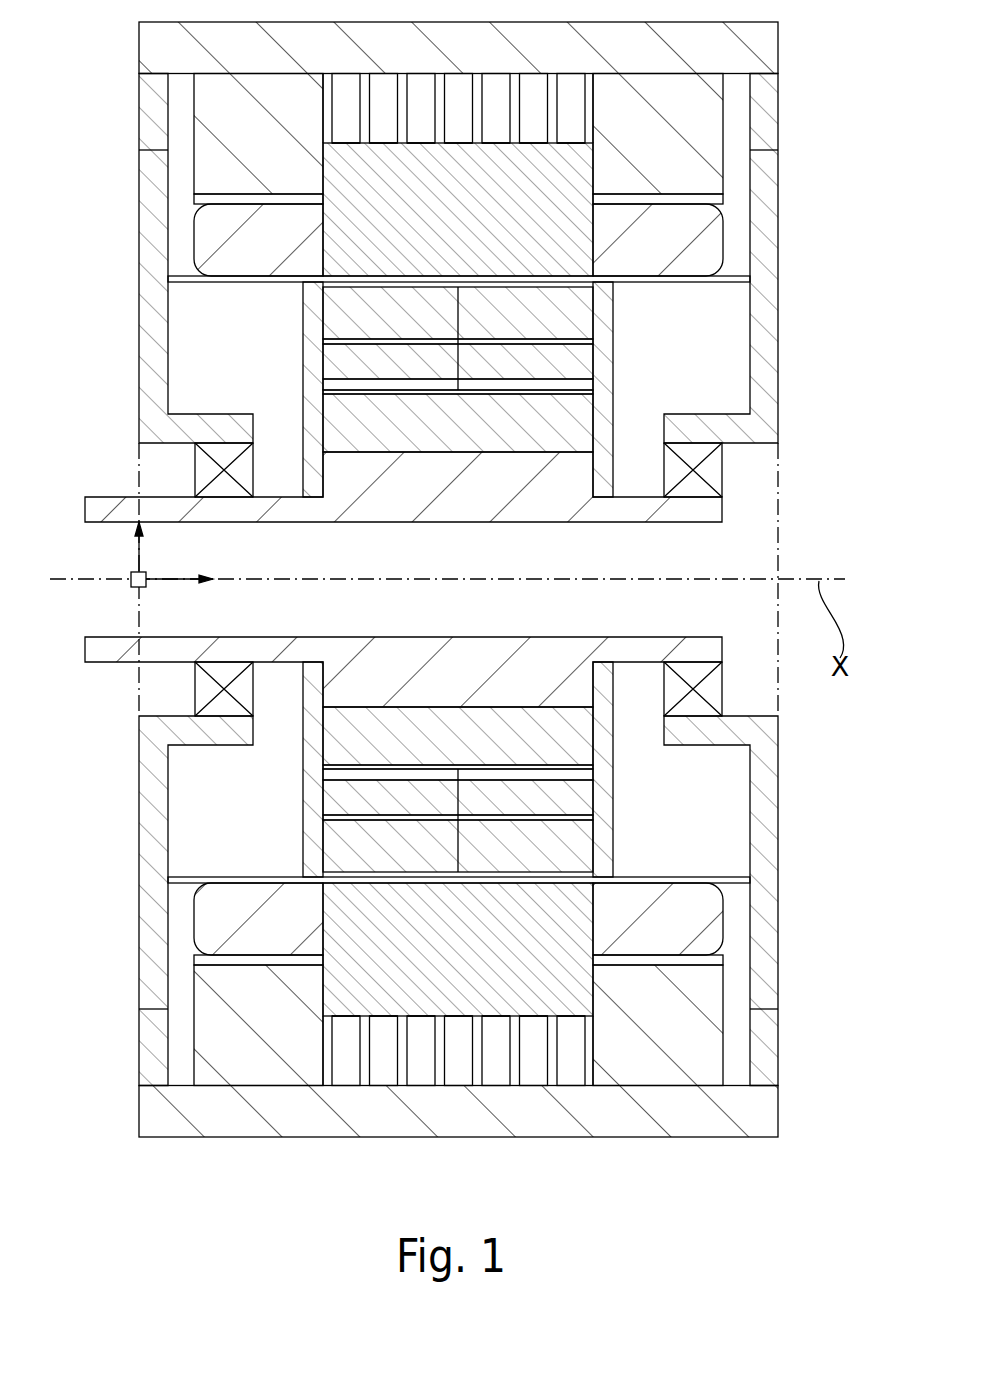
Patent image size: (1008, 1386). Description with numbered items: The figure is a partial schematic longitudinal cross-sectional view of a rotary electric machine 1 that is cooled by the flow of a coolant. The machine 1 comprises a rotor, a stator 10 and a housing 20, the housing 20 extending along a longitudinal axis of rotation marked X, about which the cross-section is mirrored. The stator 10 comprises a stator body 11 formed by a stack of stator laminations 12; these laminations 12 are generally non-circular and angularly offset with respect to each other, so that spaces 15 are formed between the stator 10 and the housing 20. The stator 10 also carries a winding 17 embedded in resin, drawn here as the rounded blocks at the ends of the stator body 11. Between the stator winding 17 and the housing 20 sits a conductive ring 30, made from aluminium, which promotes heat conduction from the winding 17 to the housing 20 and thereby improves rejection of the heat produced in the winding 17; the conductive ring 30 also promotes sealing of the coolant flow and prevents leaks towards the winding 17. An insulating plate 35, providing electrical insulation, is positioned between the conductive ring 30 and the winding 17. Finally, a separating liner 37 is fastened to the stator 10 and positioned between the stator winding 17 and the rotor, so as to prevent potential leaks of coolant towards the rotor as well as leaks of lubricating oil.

The machine 1 is at (466, 625).
The stator 10 is at (466, 647).
The stator body 11 is at (442, 221).
The stator laminations 12 is at (357, 126).
The spaces 15 is at (572, 138).
The winding 17 is at (212, 228).
The housing 20 is at (157, 50).
The conductive ring 30 is at (210, 1012).
The insulating plate 35 is at (210, 957).
The separating liner 37 is at (197, 877).